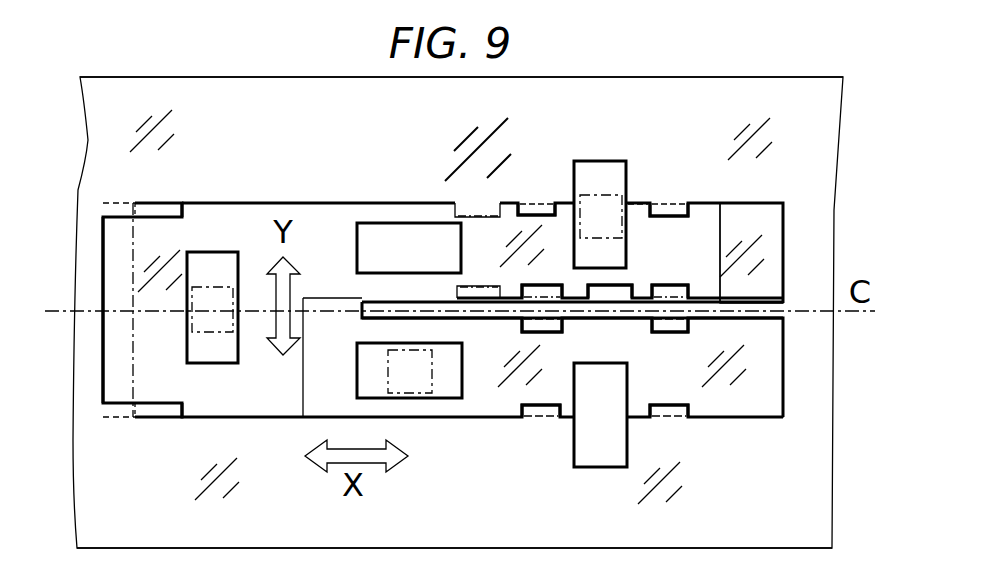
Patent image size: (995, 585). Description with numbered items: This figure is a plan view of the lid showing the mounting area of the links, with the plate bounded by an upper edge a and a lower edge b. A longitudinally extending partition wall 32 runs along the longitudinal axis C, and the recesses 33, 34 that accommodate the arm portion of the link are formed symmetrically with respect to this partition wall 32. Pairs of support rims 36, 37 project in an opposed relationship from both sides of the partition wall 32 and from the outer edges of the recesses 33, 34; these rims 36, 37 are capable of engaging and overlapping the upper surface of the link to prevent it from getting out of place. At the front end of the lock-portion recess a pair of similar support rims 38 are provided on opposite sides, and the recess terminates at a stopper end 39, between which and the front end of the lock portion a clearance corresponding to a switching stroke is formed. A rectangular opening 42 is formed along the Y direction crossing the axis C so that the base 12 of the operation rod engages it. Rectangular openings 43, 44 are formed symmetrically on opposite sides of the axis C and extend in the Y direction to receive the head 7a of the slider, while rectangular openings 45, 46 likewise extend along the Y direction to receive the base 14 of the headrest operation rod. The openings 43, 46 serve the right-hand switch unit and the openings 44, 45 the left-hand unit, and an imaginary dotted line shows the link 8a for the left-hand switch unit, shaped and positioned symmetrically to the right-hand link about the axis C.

The plate upper edge a is at (188, 77).
The plate lower edge b is at (185, 547).
The link 8a is at (344, 210).
The support rim 38 is at (157, 212).
The stopper end 39 is at (110, 370).
The rectangular opening 42 is at (210, 270).
The base 12 is at (206, 318).
The partition wall 32 is at (372, 305).
The rectangular opening 44 is at (388, 268).
The rectangular opening 43 is at (368, 372).
The head 7a is at (432, 385).
The rectangular opening 46 is at (604, 172).
The base 14 is at (625, 192).
The support rim 37 is at (535, 208).
The support rim 36 is at (545, 293).
The recess 34 is at (730, 246).
The recess 33 is at (746, 366).
The rectangular opening 45 is at (582, 418).